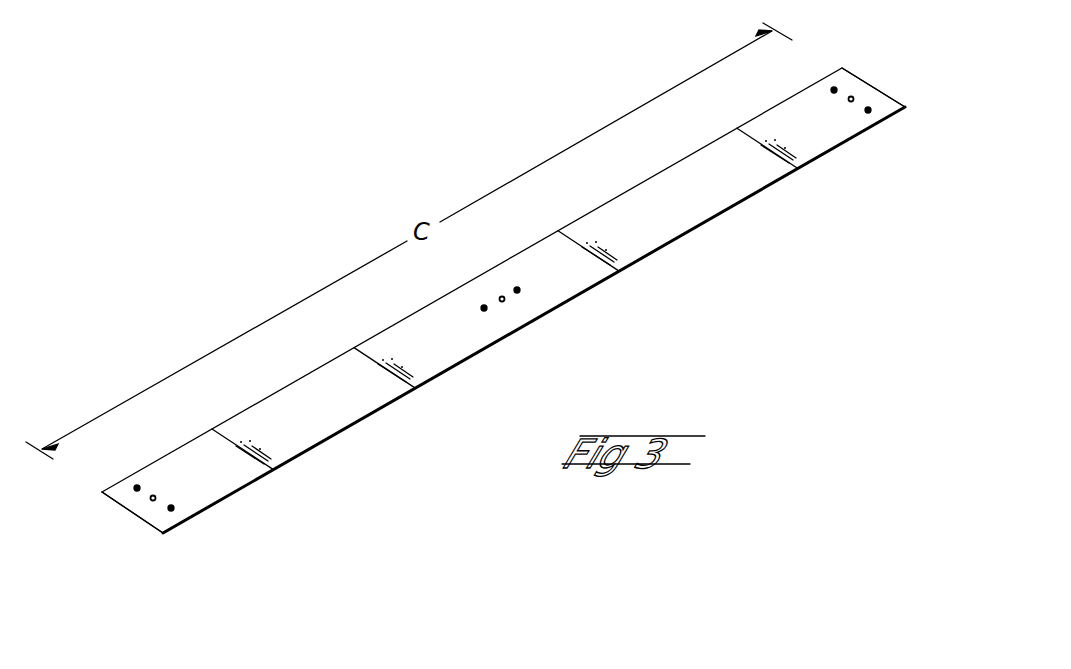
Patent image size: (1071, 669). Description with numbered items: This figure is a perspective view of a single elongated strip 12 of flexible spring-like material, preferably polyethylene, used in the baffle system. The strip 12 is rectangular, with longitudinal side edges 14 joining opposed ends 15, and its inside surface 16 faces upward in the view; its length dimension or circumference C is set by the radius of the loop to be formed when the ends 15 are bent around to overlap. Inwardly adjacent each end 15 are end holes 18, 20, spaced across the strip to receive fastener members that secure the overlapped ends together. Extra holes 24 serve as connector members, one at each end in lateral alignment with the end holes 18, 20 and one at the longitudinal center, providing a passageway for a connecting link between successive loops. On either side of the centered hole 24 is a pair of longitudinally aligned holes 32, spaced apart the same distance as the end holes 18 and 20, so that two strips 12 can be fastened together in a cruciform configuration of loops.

The elongated strip 12 is at (668, 250).
The longitudinal side edges 14 is at (281, 389).
The opposed ends 15 is at (843, 80).
The inside surface 16 is at (437, 353).
The end hole 18 is at (140, 487).
The end hole 20 is at (866, 110).
The extra hole 24 is at (151, 500).
The central holes 32 is at (515, 290).